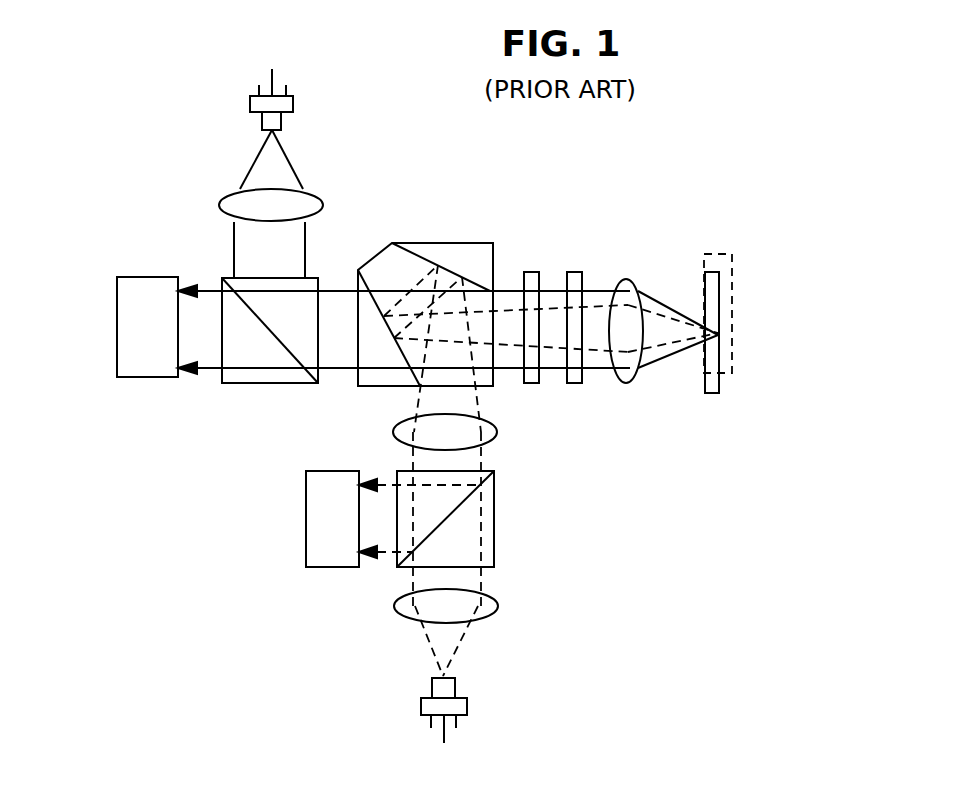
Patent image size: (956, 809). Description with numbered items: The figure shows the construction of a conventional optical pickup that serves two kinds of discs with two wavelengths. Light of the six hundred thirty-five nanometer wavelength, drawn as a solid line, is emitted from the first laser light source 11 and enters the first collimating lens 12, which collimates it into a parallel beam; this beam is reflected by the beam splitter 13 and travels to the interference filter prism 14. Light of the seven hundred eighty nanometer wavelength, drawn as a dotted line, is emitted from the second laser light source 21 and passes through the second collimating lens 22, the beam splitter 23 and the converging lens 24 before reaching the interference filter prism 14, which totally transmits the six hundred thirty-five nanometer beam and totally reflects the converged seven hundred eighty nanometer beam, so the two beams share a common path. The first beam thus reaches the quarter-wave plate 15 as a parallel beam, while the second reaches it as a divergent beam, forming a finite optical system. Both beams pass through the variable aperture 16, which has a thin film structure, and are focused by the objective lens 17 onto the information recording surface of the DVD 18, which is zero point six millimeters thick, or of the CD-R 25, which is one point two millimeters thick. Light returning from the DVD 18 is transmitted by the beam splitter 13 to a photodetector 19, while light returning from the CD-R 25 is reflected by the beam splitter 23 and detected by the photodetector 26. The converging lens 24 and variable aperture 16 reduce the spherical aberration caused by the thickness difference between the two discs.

The first laser light source 11 is at (293, 104).
The first collimating lens 12 is at (321, 195).
The beam splitter 13 is at (265, 383).
The interference filter prism 14 is at (450, 243).
The quarter-wave plate 15 is at (531, 272).
The variable aperture 16 is at (574, 383).
The objective lens 17 is at (630, 280).
The DVD 18 is at (712, 393).
The first photodetector 19 is at (117, 318).
The second laser light source 21 is at (467, 705).
The second collimating lens 22 is at (497, 610).
The beam splitter 23 is at (494, 540).
The converging lens 24 is at (497, 436).
The CD-R 25 is at (732, 302).
The photodetector 26 is at (306, 518).